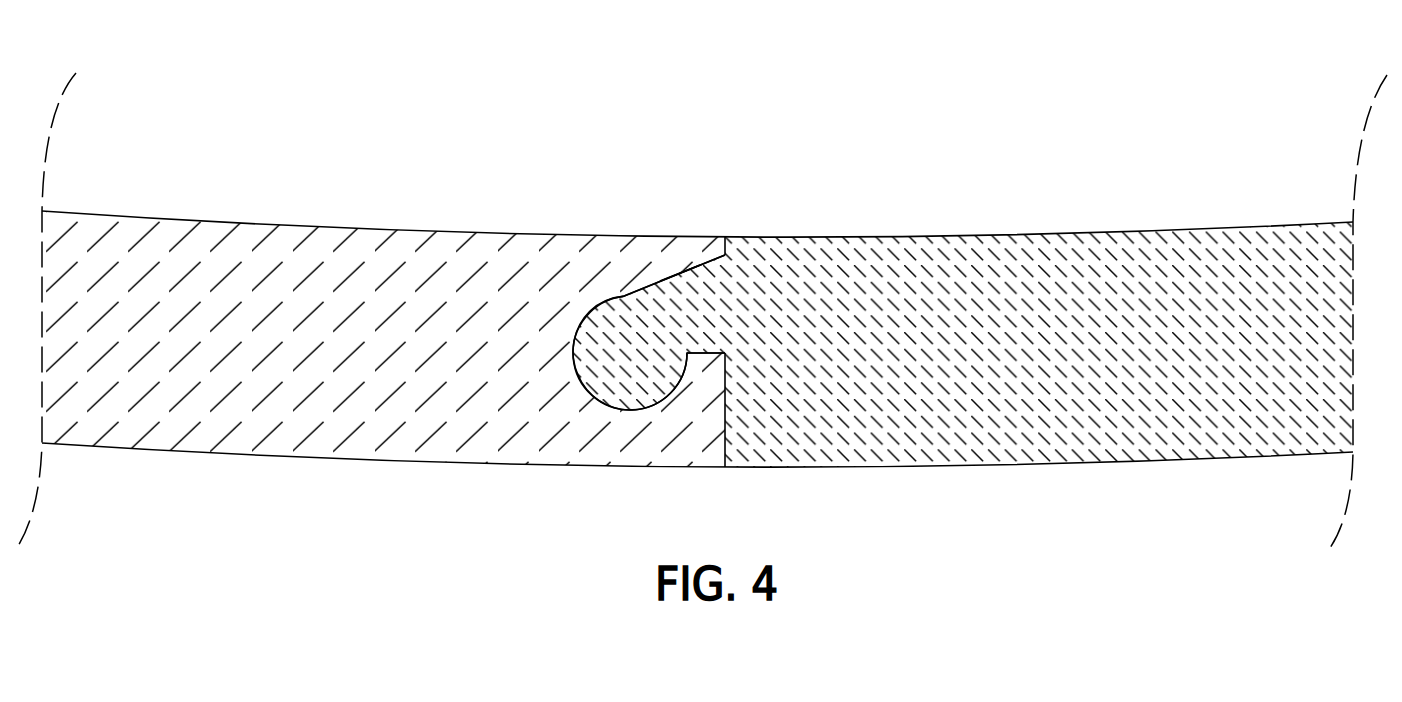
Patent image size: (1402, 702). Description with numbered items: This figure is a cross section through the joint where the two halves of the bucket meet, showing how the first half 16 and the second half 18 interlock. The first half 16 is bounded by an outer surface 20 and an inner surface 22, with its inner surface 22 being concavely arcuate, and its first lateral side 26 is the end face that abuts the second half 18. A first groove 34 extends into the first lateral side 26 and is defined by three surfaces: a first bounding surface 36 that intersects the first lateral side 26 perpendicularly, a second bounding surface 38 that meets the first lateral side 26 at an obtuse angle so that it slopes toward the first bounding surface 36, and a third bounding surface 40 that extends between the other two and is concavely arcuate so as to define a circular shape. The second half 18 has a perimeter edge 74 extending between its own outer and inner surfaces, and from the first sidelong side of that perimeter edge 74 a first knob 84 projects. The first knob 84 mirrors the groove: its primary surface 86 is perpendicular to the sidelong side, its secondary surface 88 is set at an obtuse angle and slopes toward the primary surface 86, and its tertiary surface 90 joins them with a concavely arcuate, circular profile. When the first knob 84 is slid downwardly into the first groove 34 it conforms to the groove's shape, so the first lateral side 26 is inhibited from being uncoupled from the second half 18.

The first half 16 is at (405, 190).
The second half 18 is at (1087, 200).
The outer surface 20 is at (402, 460).
The inner surface 22 is at (266, 225).
The first lateral side 26 is at (725, 430).
The first groove 34 is at (728, 315).
The first bounding surface 36 is at (727, 343).
The second bounding surface 38 is at (683, 278).
The third bounding surface 40 is at (623, 296).
The perimeter edge 74 is at (723, 400).
The first knob 84 is at (563, 420).
The primary surface 86 is at (697, 354).
The secondary surface 88 is at (660, 284).
The tertiary surface 90 is at (573, 362).